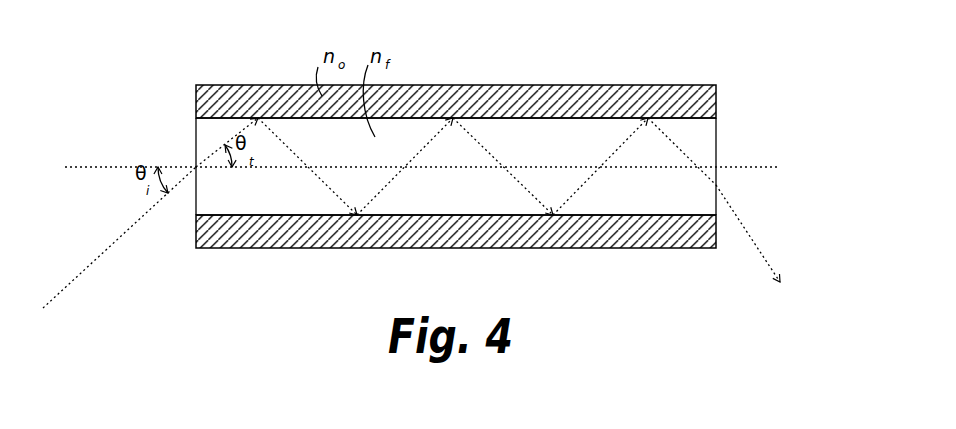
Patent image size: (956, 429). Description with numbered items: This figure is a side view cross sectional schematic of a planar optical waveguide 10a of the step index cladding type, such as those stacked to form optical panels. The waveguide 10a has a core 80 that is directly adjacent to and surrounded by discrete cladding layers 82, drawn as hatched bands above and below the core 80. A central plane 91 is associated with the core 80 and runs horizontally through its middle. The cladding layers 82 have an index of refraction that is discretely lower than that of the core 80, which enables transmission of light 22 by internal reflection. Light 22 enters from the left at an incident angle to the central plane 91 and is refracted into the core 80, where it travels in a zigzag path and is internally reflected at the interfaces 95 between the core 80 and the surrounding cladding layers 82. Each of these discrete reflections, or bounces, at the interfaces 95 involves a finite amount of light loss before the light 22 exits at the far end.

The planar optical waveguide 10a is at (782, 86).
The light 22 is at (46, 307).
The core layer 80 is at (716, 137).
The cladding layer 82 is at (716, 98).
The central plane 91 is at (102, 167).
The interface 95 is at (548, 119).